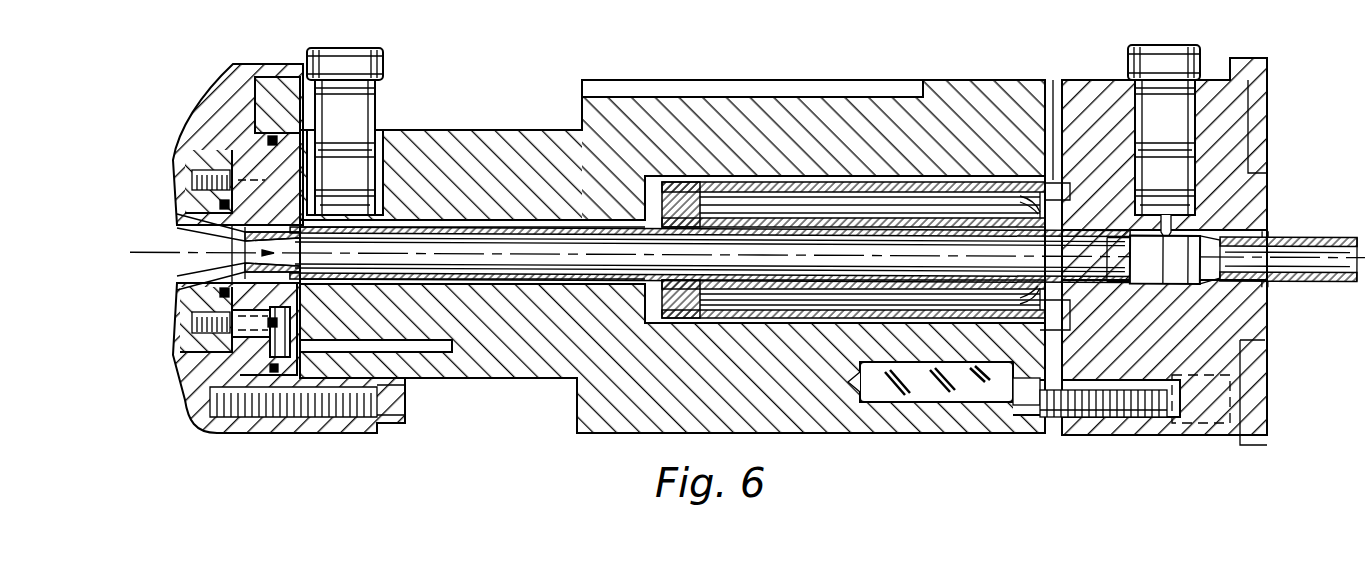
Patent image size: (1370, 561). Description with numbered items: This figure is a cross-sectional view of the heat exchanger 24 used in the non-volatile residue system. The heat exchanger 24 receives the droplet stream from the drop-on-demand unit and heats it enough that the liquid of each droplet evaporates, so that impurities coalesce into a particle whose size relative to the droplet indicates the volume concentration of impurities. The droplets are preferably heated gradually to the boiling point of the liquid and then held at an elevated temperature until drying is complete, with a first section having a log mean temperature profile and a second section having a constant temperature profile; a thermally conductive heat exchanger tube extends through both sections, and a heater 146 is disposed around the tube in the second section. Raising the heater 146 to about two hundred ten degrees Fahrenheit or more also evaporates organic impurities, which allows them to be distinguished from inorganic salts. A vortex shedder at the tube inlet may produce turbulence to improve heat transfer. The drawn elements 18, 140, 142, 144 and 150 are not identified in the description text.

The shaft 18 is at (603, 252).
The heat exchanger 24 is at (540, 82).
The bearing sleeve 140 is at (558, 230).
The drive tube 142 is at (490, 243).
The bearing retainer 144 is at (958, 232).
The heater 146 is at (798, 200).
The collet 150 is at (176, 235).